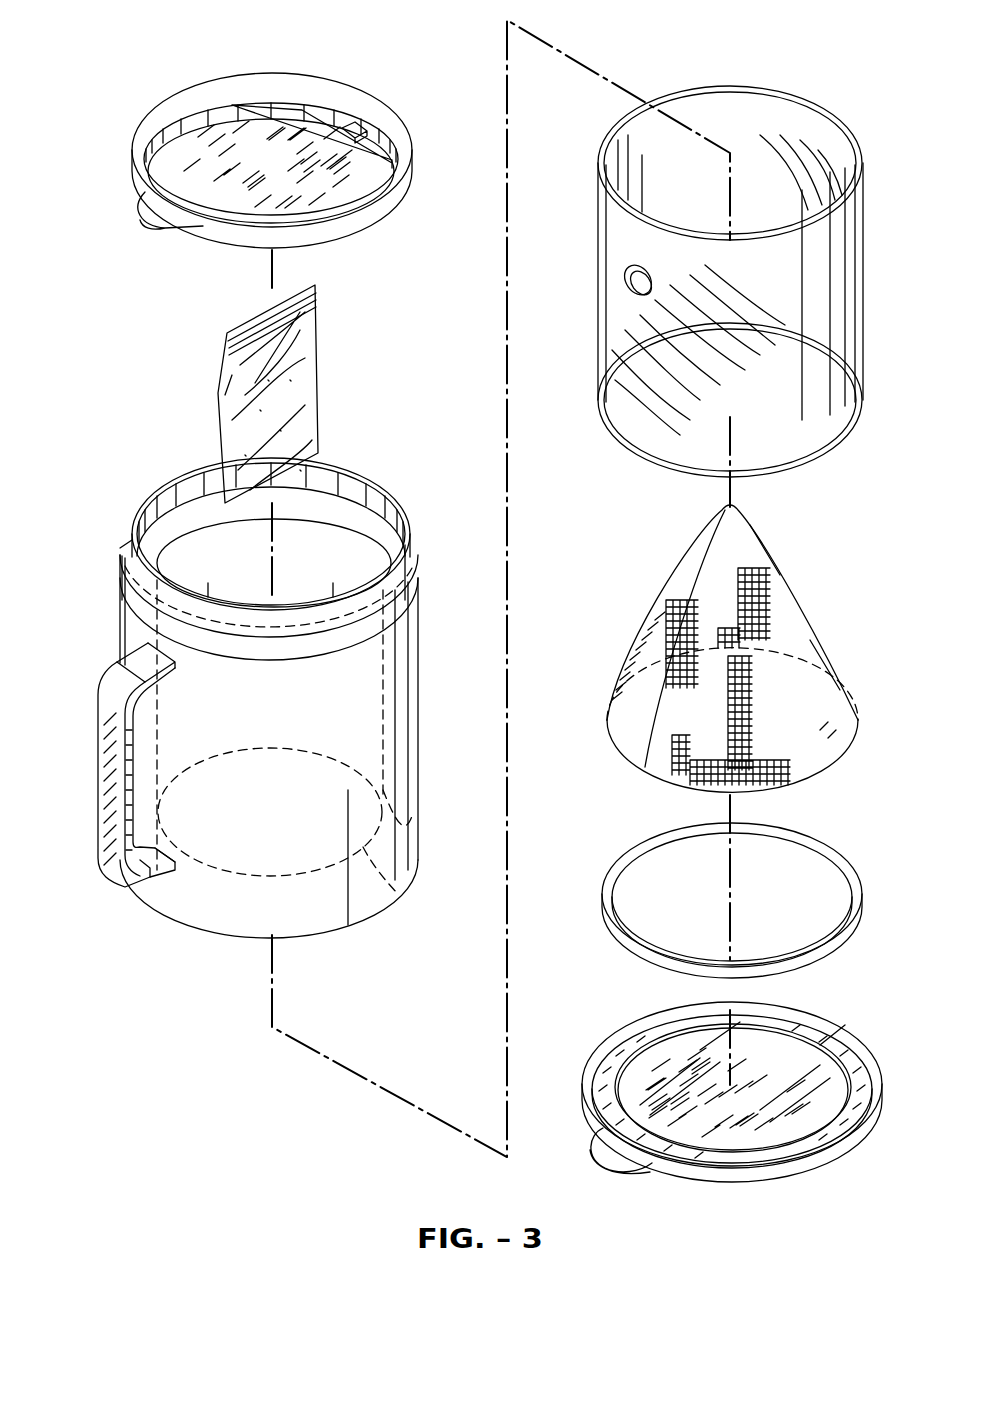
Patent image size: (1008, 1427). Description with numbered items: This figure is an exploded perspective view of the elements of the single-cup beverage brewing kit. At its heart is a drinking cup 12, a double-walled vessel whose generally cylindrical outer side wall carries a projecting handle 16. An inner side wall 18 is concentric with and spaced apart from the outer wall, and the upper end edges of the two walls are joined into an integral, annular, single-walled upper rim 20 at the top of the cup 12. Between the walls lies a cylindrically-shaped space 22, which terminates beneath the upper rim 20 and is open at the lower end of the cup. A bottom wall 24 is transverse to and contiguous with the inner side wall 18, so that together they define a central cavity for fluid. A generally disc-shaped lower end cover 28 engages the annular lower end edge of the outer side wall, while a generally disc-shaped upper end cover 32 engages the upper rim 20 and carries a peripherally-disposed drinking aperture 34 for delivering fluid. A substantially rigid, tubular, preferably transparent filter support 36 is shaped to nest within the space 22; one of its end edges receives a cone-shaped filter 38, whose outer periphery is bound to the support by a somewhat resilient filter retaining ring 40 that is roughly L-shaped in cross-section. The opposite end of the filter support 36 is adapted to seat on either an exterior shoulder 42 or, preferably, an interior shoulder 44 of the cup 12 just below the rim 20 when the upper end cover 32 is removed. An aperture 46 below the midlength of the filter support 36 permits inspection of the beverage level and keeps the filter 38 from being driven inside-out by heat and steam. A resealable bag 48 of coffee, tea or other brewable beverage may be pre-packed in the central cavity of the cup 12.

The drinking cup 12 is at (261, 689).
The projecting handle 16 is at (108, 672).
The inner side wall 18 is at (345, 565).
The upper rim 20 is at (395, 577).
The cylindrically-shaped space 22 is at (428, 747).
The bottom wall 24 is at (412, 897).
The lower end cover 28 is at (790, 1172).
The upper end cover 32 is at (193, 91).
The drinking aperture 34 is at (358, 133).
The filter support 36 is at (630, 428).
The cone-shaped filter 38 is at (785, 603).
The filter retaining ring 40 is at (825, 946).
The exterior shoulder 42 is at (125, 558).
The interior shoulder 44 is at (380, 548).
The aperture 46 is at (633, 287).
The resealable bag 48 is at (320, 413).